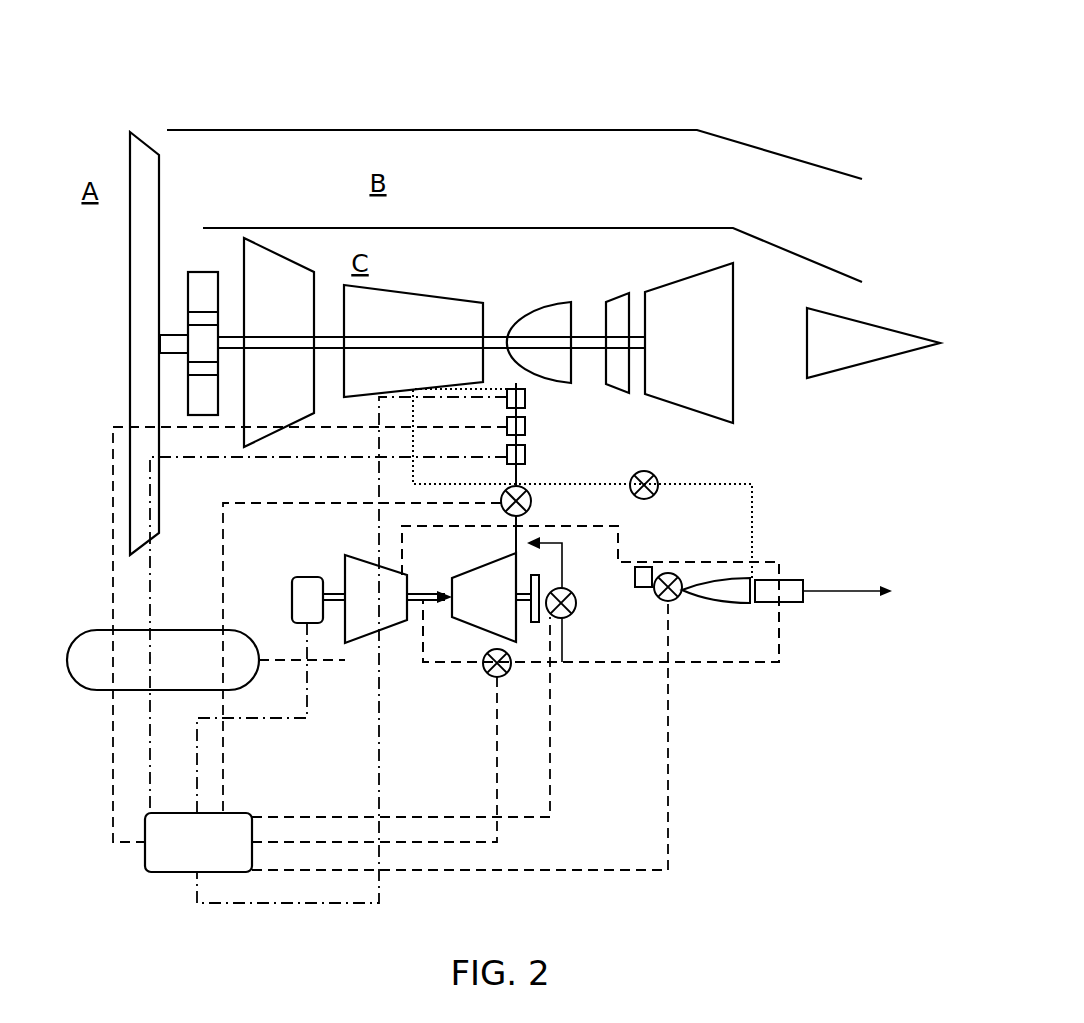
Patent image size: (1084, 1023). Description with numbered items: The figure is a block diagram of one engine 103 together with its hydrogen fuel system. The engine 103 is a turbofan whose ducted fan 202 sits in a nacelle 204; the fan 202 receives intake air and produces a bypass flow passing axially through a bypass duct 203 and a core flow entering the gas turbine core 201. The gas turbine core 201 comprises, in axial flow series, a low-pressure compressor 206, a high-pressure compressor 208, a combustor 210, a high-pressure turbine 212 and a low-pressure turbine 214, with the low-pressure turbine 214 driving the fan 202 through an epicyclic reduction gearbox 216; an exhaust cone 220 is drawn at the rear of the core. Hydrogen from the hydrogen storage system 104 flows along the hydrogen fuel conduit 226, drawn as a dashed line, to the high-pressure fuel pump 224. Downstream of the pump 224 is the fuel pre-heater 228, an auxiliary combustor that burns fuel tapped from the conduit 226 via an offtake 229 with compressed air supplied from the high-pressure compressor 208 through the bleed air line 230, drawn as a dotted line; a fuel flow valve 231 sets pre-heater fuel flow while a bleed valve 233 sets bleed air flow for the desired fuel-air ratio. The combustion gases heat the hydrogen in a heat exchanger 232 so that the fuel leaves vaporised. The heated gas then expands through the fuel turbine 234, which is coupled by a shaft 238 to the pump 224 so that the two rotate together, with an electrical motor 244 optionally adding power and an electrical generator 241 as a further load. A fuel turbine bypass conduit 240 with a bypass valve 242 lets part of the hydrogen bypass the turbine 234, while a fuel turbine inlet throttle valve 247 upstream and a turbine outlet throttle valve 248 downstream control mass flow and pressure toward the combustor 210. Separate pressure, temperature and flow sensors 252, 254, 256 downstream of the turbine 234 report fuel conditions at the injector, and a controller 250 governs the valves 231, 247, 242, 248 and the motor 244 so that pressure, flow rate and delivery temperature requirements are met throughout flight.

The engine 103 is at (515, 281).
The hydrogen storage system 104 is at (92, 630).
The gas turbine core 201 is at (422, 227).
The ducted fan 202 is at (130, 132).
The bypass duct 203 is at (298, 160).
The nacelle 204 is at (212, 128).
The low-pressure compressor 206 is at (313, 272).
The high-pressure compressor 208 is at (447, 300).
The combustor 210 is at (563, 302).
The high-pressure turbine 212 is at (624, 293).
The low-pressure turbine 214 is at (713, 263).
The reduction gearbox 216 is at (203, 272).
The exhaust nozzle 220 is at (898, 330).
The high-pressure fuel pump 224 is at (338, 563).
The hydrogen fuel conduit 226 is at (323, 660).
The fuel pre-heater 228 is at (727, 624).
The offtake 229 is at (635, 583).
The bleed air line 230 is at (413, 438).
The fuel flow valve 231 is at (668, 572).
The heat exchanger 232 is at (779, 605).
The bleed valve 233 is at (650, 470).
The fuel turbine 234 is at (517, 640).
The shaft 238 is at (382, 600).
The fuel turbine bypass conduit 240 is at (563, 645).
The electrical generator 241 is at (537, 620).
The bypass valve 242 is at (572, 590).
The electrical motor 244 is at (290, 596).
The fuel turbine inlet throttle valve 247 is at (502, 678).
The turbine outlet throttle valve 248 is at (530, 507).
The controller 250 is at (145, 855).
The pressure sensor 252 is at (507, 455).
The temperature sensor 254 is at (507, 427).
The flow sensor 256 is at (507, 398).